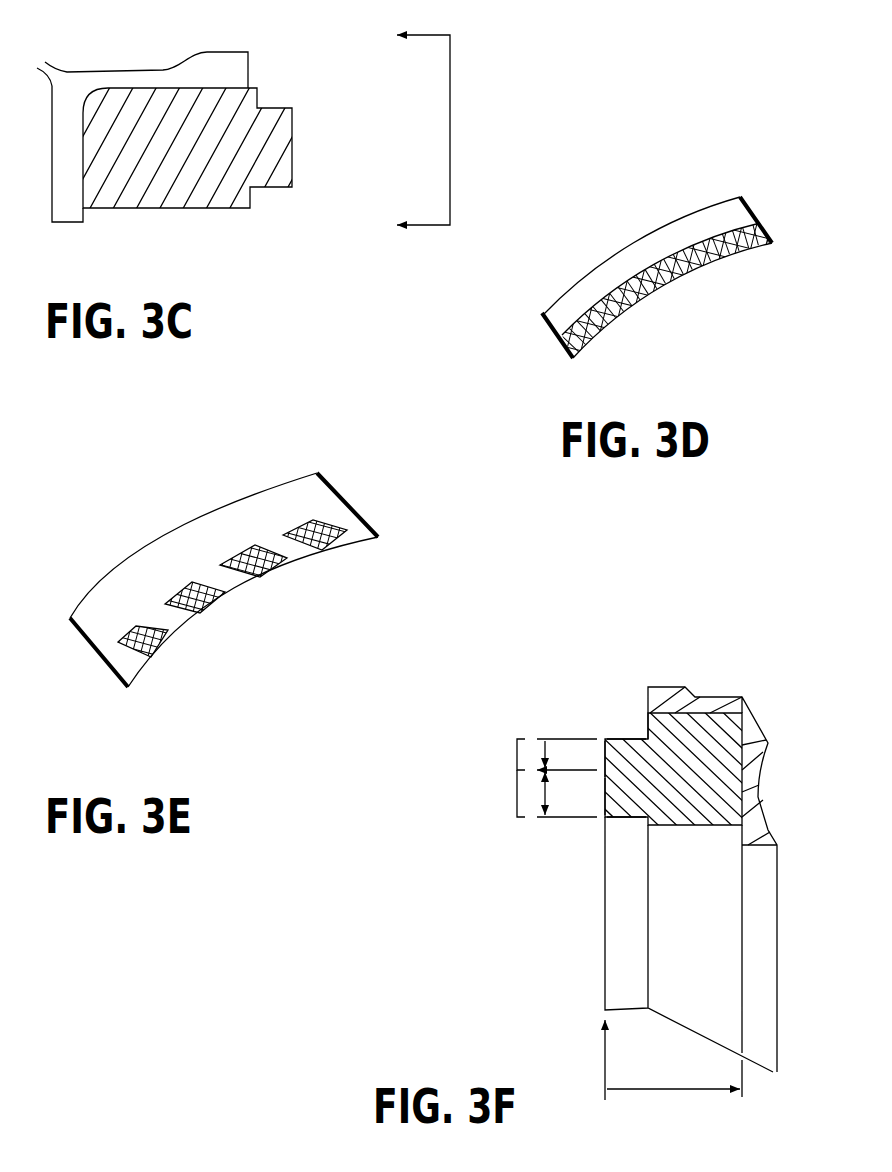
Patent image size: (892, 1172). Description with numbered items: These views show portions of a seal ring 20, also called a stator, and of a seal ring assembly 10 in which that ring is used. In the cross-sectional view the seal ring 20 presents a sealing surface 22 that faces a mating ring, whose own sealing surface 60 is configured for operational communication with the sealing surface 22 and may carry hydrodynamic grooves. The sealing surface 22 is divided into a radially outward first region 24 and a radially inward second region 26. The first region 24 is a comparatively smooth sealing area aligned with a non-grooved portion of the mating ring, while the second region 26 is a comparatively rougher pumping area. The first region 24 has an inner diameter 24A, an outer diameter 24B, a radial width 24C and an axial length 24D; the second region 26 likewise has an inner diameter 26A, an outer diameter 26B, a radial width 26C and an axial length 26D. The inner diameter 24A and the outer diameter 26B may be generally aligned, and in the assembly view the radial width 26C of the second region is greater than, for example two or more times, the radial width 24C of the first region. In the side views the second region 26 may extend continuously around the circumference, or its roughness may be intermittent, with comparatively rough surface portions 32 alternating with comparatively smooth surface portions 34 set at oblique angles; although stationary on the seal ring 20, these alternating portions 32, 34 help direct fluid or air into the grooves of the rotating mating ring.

In FIG. 3F, the seal ring assembly 10 is at (683, 659).
In FIG. 3C, the seal ring 20 is at (272, 76).
In FIG. 3D, the seal ring 20 is at (617, 222).
In FIG. 3E, the seal ring 20 is at (157, 505).
In FIG. 3F, the seal ring 20 is at (722, 713).
In FIG. 3C, the sealing surface 22 is at (350, 110).
In FIG. 3D, the sealing surface 22 is at (787, 209).
In FIG. 3C, the first region 24 is at (298, 110).
In FIG. 3D, the first region 24 is at (631, 291).
In FIG. 3E, the first region 24 is at (179, 579).
In FIG. 3F, the first region 24 is at (512, 755).
In FIG. 3C, the second region 26 is at (298, 147).
In FIG. 3D, the second region 26 is at (668, 282).
In FIG. 3E, the second region 26 is at (222, 626).
In FIG. 3F, the second region 26 is at (512, 790).
In FIG. 3E, the rough surface portions 32 is at (270, 577).
In FIG. 3E, the smooth surface 34 is at (347, 523).
In FIG. 3E, the sealing surface of mating ring 60 is at (374, 495).
In FIG. 3F, the inner diameter of first region 24A is at (597, 755).
In FIG. 3F, the outer diameter of second region 26B is at (573, 723).
In FIG. 3F, the outer diameter of first region 24B is at (606, 727).
In FIG. 3F, the inner diameter of second region 26A is at (598, 818).
In FIG. 3F, the radial width of first region 24C is at (553, 748).
In FIG. 3F, the radial width of second region 26C is at (560, 803).
In FIG. 3F, the axial length of first region 24D is at (693, 1090).
In FIG. 3F, the axial length of second region 26D is at (762, 1098).